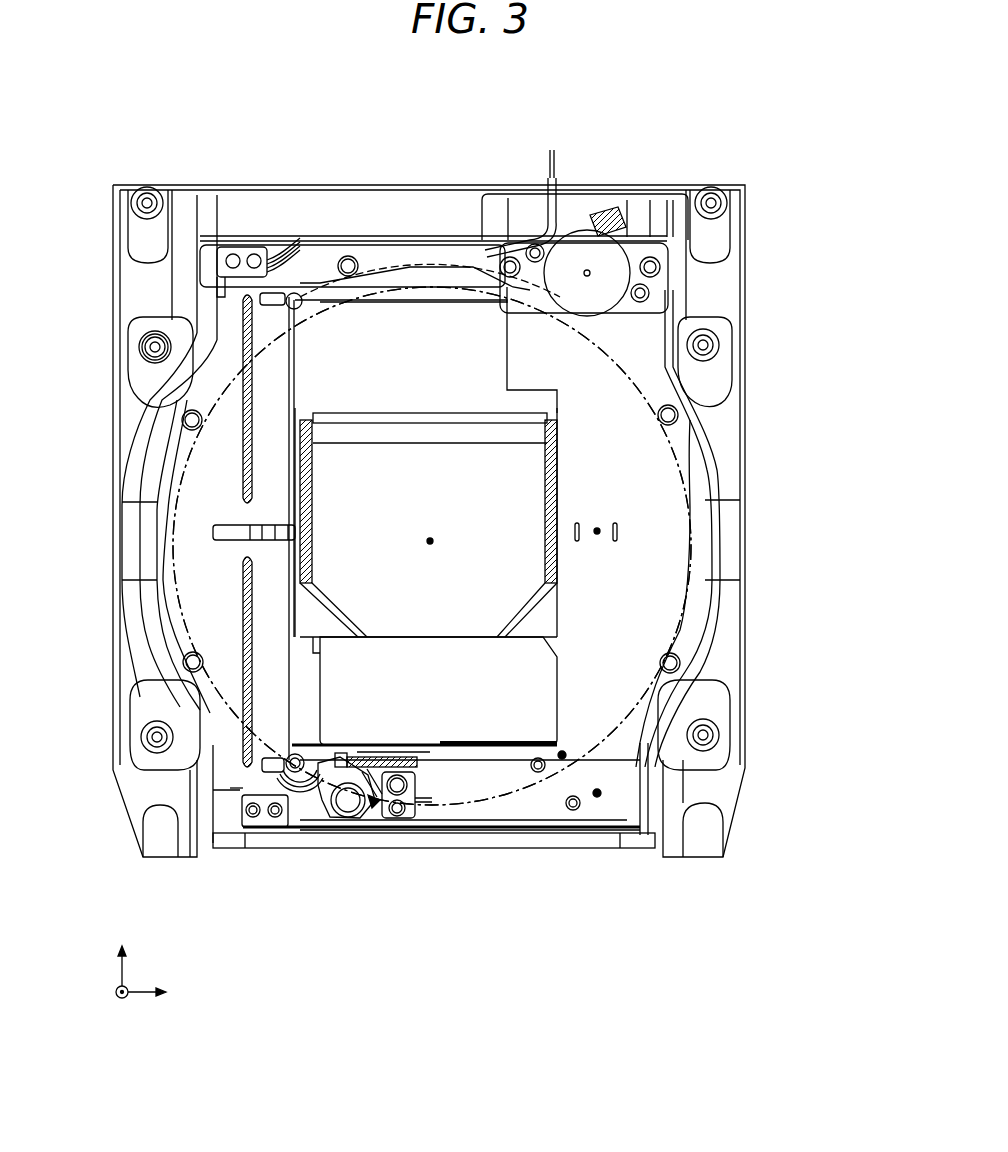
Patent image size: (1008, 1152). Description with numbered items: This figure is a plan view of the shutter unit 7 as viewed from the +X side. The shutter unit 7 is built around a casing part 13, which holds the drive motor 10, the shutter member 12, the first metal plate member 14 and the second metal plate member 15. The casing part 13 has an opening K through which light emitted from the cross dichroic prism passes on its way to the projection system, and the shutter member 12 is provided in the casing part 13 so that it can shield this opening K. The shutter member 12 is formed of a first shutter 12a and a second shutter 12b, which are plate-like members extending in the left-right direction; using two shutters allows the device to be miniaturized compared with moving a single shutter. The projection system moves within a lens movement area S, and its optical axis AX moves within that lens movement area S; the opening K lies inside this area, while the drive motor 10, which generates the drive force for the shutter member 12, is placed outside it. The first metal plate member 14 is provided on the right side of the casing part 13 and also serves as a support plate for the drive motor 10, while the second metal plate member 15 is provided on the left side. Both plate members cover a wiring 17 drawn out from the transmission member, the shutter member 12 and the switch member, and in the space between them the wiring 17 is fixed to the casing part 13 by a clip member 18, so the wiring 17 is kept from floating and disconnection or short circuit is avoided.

The shutter unit 7 is at (739, 158).
The drive motor 10 is at (594, 240).
The shutter member 12 is at (575, 547).
The first shutter 12a is at (480, 368).
The second shutter 12b is at (537, 707).
The casing part 13 is at (735, 291).
The first metal plate member 14 is at (677, 633).
The second metal plate member 15 is at (210, 388).
The wiring 17 is at (309, 795).
The clip member 18 is at (355, 800).
The opening K is at (503, 477).
The lens movement area S is at (640, 678).
The optical axis AX is at (430, 541).